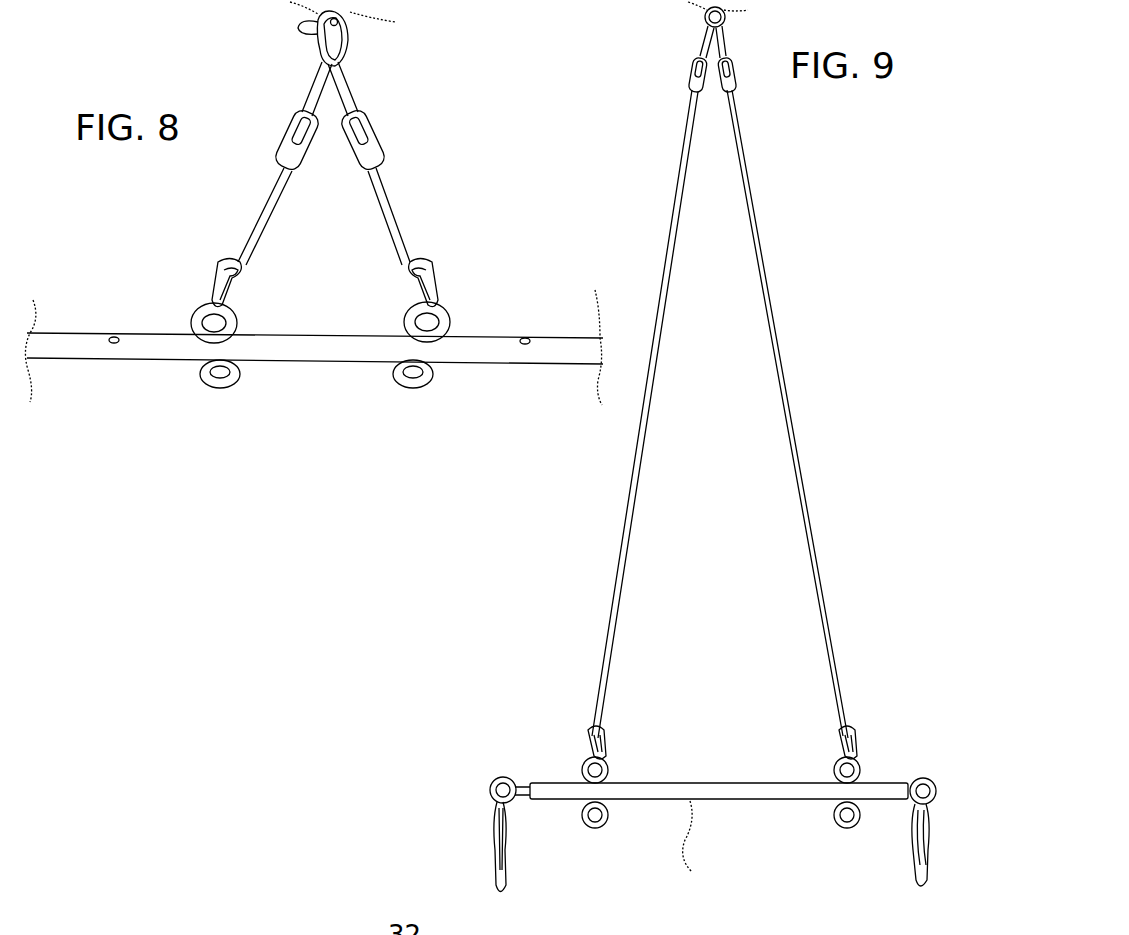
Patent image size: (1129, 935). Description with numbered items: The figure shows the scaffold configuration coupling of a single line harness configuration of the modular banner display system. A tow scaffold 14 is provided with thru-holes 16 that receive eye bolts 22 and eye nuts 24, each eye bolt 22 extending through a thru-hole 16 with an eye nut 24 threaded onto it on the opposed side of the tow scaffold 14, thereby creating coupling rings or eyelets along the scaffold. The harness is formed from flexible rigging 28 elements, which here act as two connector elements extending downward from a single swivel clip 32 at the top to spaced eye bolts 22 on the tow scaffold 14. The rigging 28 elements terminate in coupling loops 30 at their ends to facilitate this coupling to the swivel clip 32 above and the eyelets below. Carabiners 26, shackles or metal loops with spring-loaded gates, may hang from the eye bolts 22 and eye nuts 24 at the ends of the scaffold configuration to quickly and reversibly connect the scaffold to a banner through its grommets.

In FIG. 8, the tow scaffold 14 is at (478, 364).
In FIG. 9, the tow scaffold 14 is at (708, 783).
In FIG. 8, the thru-hole 16 is at (114, 337).
In FIG. 9, the thru-hole 16 is at (690, 840).
In FIG. 8, the eye bolt 22 is at (236, 322).
In FIG. 9, the eye bolt 22 is at (608, 768).
In FIG. 8, the eye nut 24 is at (234, 384).
In FIG. 9, the eye nut 24 is at (506, 778).
In FIG. 9, the carabiner 26 is at (505, 880).
In FIG. 8, the flexible rigging 28 is at (265, 215).
In FIG. 9, the flexible rigging 28 is at (658, 250).
In FIG. 8, the coupling loop 30 is at (300, 92).
In FIG. 9, the coupling loop 30 is at (690, 66).
In FIG. 8, the swivel clip 32 is at (348, 28).
In FIG. 9, the swivel clip 32 is at (705, 24).